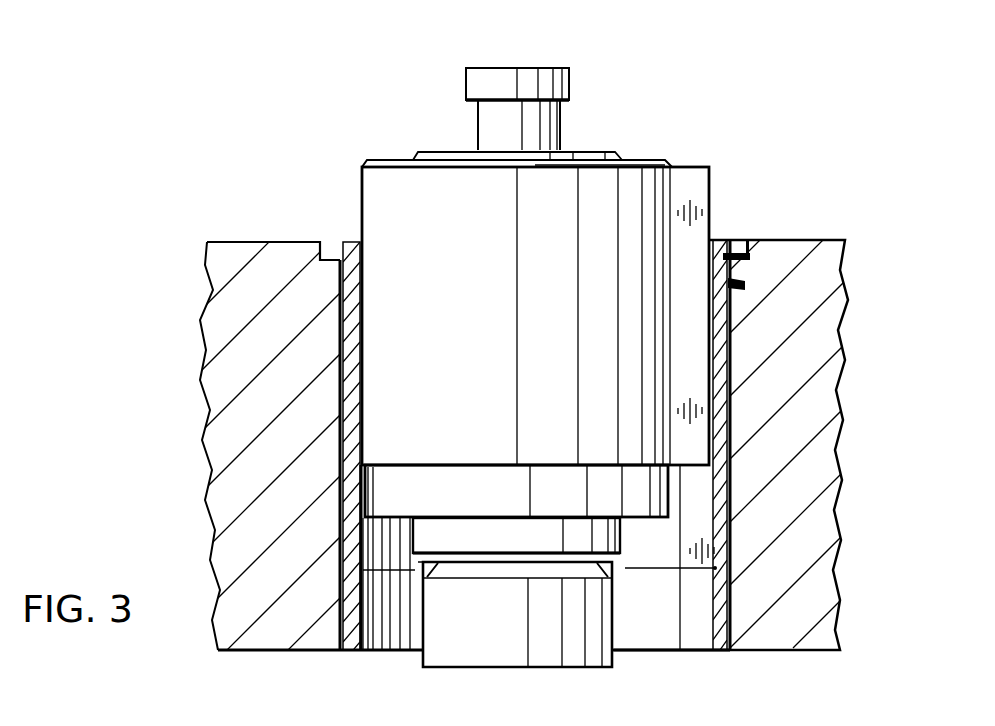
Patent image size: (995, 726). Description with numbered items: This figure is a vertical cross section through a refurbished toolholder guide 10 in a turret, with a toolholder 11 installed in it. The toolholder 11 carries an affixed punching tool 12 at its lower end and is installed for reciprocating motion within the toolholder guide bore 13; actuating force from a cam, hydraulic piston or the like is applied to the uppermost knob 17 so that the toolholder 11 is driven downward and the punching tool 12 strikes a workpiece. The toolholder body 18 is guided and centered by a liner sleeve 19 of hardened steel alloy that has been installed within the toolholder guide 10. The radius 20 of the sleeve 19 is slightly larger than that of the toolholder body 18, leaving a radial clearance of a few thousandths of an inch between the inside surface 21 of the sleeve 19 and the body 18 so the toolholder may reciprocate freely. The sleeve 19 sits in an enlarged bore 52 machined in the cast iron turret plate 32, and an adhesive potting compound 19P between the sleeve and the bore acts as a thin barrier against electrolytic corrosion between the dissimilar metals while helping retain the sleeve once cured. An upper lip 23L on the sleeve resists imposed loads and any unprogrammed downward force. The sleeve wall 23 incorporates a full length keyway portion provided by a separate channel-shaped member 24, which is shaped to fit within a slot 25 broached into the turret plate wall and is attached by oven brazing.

The toolholder guide 10 is at (742, 290).
The toolholder 11 is at (578, 152).
The punching tool 12 is at (440, 662).
The toolholder guide bore 13 is at (727, 360).
The knob 17 is at (528, 78).
The toolholder body 18 is at (640, 172).
The liner sleeve 19 is at (727, 423).
The adhesive potting compound 19P is at (340, 410).
The radius of sleeve 20 is at (410, 568).
The inside surface of sleeve 21 is at (362, 235).
The sleeve wall 23 is at (727, 480).
The upper lip 23L is at (723, 240).
The channel-shaped member 24 is at (733, 308).
The slot 25 is at (717, 605).
The turret plate 32 is at (240, 250).
The enlarged bore 52 is at (733, 633).